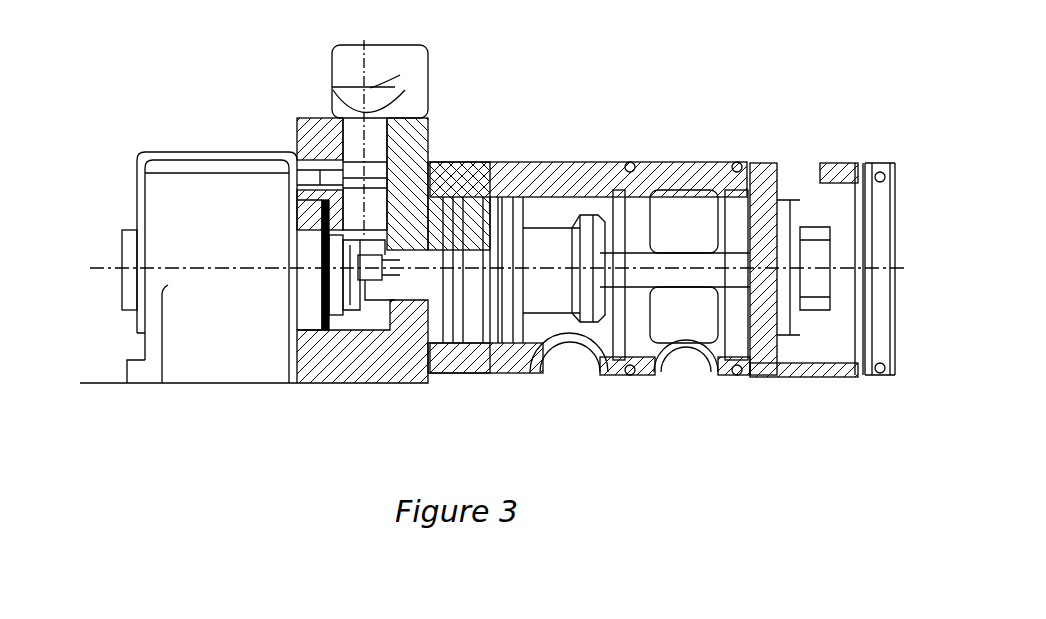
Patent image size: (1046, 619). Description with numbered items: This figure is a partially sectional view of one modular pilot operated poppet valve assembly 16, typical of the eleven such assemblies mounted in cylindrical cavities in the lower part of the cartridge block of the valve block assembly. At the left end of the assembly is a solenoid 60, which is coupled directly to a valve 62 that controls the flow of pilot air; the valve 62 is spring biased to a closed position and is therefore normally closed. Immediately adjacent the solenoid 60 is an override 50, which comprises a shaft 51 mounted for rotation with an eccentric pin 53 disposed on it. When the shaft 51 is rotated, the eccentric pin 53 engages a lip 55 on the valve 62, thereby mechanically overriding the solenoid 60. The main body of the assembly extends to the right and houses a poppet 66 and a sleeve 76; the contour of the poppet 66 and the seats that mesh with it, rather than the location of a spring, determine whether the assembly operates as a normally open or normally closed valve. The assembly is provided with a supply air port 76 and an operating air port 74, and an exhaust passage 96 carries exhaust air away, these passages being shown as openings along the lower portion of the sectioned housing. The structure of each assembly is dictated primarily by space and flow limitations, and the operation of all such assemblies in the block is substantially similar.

The modular first pilot operated poppet valve assembly 16 is at (653, 100).
The override 50 is at (392, 47).
The shaft 51 is at (393, 143).
The eccentric pin 53 is at (385, 240).
The lip 55 is at (358, 300).
The solenoid 60 is at (195, 152).
The valve 62 is at (390, 280).
The poppet 66 is at (767, 217).
The operating air port 74 is at (680, 352).
The supply air port 76 is at (879, 170).
The exhaust passage 96 is at (570, 355).